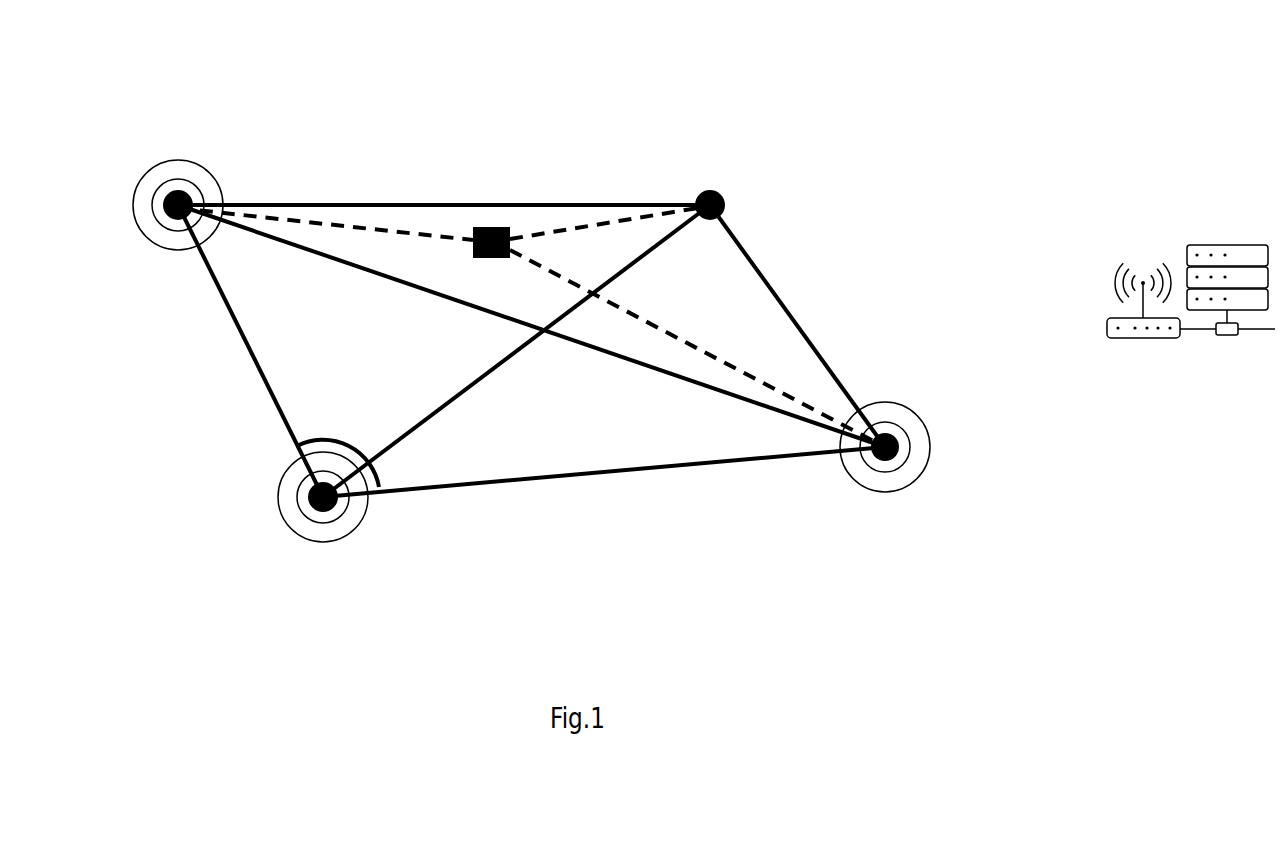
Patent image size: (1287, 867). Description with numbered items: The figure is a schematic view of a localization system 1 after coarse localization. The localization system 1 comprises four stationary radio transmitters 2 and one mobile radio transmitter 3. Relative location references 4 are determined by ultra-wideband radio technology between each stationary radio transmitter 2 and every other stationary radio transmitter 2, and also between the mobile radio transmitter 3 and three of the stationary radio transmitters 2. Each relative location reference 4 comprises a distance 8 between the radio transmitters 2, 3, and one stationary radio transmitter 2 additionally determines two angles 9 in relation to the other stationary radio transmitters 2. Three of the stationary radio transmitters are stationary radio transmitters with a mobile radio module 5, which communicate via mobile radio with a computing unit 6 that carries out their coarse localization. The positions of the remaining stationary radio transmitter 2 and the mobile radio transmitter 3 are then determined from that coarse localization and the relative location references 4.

The localization system 1 is at (837, 128).
The stationary radio transmitter 2 is at (705, 193).
The mobile radio transmitter 3 is at (490, 227).
The relative location reference 4 is at (663, 370).
The stationary radio transmitter with a mobile radio module 5 is at (168, 192).
The computing unit 6 is at (1227, 227).
The distance 8 is at (627, 222).
The angle 9 is at (383, 467).